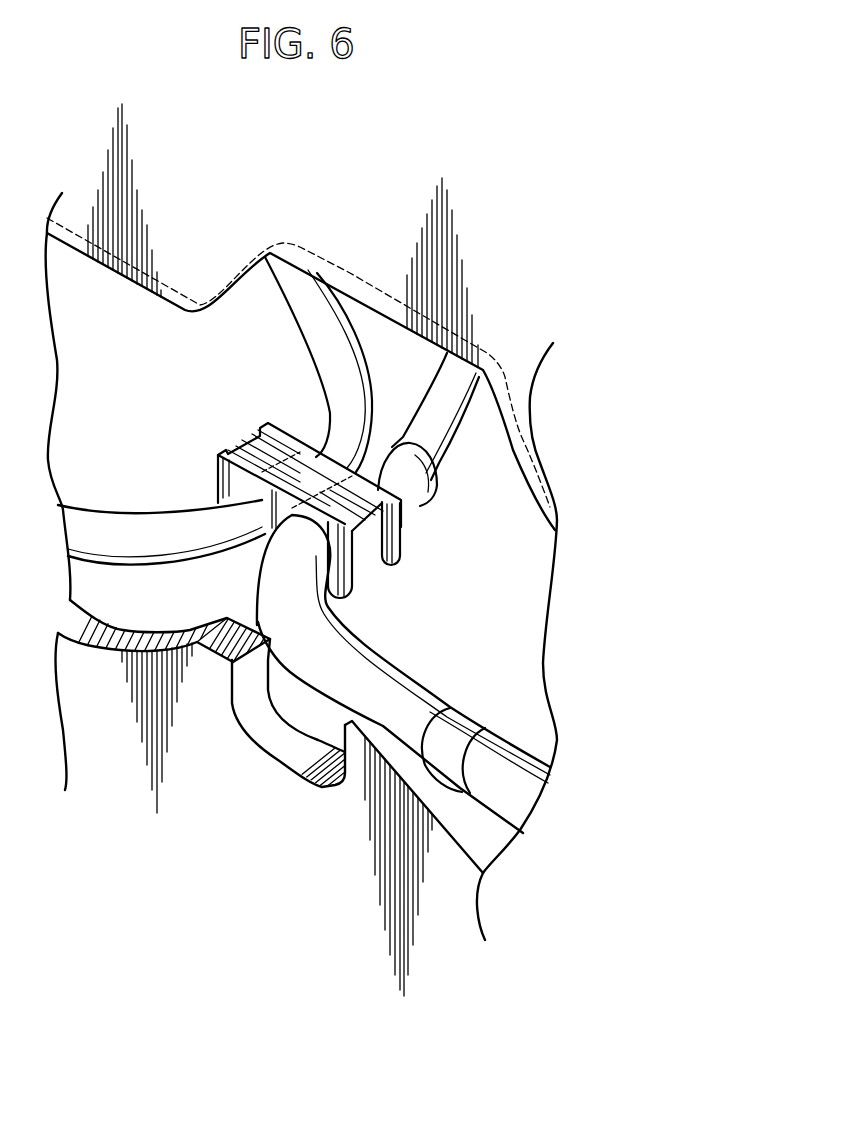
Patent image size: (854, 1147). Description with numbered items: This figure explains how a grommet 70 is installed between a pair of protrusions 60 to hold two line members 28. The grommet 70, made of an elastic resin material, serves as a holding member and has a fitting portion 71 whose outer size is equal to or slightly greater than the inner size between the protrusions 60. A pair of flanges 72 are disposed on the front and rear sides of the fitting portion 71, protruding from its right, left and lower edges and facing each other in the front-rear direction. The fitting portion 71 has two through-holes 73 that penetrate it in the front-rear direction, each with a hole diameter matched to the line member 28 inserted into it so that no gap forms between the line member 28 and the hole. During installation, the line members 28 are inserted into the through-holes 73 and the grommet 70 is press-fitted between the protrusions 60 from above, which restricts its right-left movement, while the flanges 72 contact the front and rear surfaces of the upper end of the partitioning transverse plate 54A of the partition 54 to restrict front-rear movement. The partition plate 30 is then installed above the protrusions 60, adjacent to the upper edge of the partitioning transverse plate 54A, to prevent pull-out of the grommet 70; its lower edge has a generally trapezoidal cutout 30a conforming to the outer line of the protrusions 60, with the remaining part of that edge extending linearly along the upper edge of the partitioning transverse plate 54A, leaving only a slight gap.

The line member 28 is at (120, 542).
The partition plate 30 is at (160, 237).
The cutout 30a is at (417, 332).
The partitioning transverse plate 54A is at (266, 716).
The flange 54 is at (122, 737).
The protrusion 60 is at (200, 673).
The grommet 70 is at (337, 504).
The fitting portion 71 is at (366, 548).
The flange 72 is at (262, 422).
The through-hole 73 is at (240, 512).